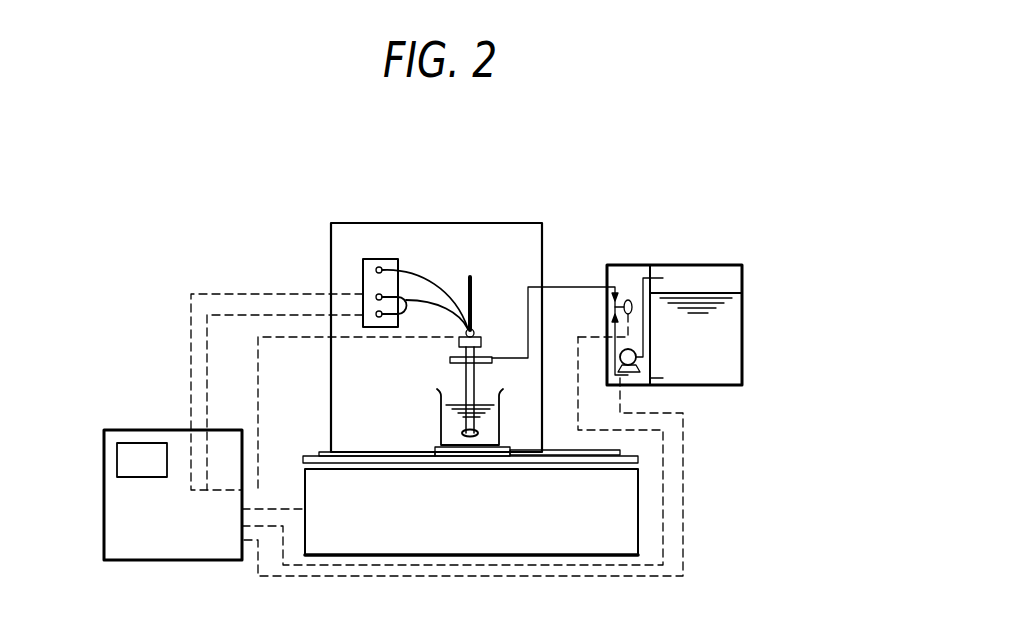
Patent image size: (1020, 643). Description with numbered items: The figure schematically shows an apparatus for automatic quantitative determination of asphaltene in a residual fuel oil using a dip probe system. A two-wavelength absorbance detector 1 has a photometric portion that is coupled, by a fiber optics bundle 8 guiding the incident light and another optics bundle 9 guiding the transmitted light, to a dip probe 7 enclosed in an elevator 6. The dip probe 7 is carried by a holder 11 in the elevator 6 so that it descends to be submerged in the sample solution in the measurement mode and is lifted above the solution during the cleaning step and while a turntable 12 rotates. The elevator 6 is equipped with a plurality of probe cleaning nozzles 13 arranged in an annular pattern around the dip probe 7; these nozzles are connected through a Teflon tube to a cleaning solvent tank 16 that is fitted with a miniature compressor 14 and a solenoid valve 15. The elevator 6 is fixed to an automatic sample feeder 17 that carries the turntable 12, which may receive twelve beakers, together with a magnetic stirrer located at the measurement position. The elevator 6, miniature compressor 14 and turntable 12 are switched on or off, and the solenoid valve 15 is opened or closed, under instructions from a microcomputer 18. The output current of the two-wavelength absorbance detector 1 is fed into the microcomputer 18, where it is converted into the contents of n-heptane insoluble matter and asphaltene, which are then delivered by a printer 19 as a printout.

The two-wavelength absorbance detector 1 is at (375, 262).
The elevator 6 is at (497, 245).
The dip probe 7 is at (477, 386).
The fiber optics bundle 8 is at (417, 268).
The optics bundle 9 is at (428, 302).
The holder 11 is at (478, 330).
The turntable 12 is at (527, 445).
The probe cleaning nozzles 13 is at (443, 364).
The miniature compressor 14 is at (620, 368).
The solenoid valve 15 is at (613, 326).
The cleaning solvent tank 16 is at (723, 348).
The automatic sample feeder 17 is at (628, 522).
The microcomputer 18 is at (215, 450).
The printer 19 is at (128, 452).